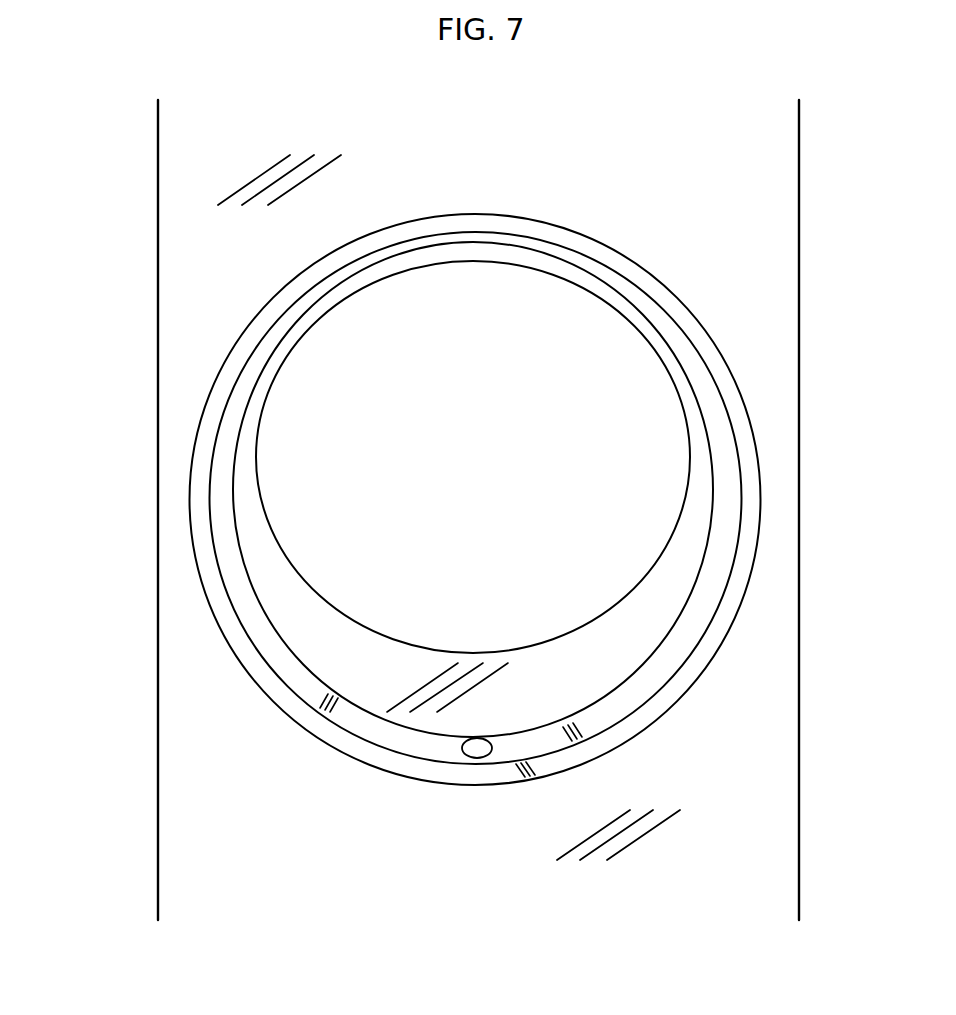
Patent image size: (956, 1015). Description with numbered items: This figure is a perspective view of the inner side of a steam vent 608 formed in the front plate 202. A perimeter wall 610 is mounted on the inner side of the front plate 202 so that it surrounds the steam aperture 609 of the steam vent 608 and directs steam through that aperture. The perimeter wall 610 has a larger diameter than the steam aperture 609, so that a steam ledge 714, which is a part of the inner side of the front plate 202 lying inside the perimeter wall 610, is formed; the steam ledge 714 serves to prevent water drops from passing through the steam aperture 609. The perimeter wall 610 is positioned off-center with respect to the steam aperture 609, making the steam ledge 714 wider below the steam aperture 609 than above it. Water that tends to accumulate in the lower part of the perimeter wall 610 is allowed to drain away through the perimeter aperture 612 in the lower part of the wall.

The front plate 202 is at (157, 217).
The steam vent 608 is at (622, 207).
The steam aperture 609 is at (558, 470).
The perimeter wall 610 is at (286, 738).
The perimeter aperture 612 is at (477, 745).
The steam ledge 714 is at (442, 253).